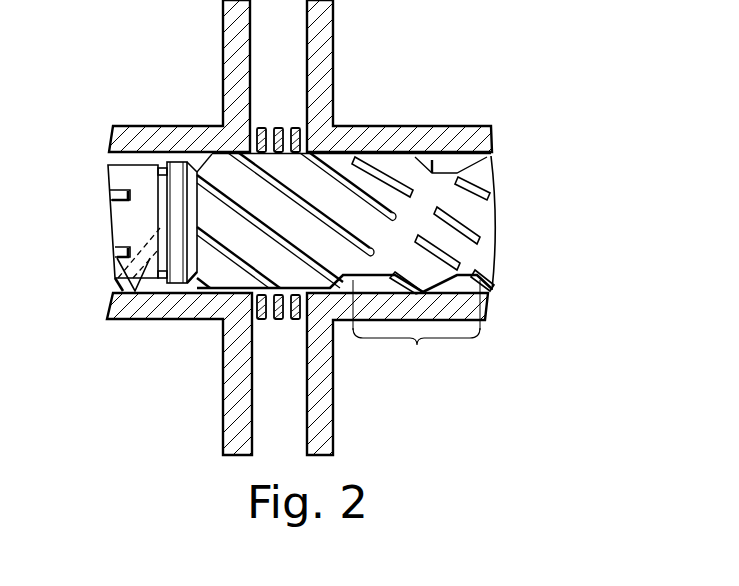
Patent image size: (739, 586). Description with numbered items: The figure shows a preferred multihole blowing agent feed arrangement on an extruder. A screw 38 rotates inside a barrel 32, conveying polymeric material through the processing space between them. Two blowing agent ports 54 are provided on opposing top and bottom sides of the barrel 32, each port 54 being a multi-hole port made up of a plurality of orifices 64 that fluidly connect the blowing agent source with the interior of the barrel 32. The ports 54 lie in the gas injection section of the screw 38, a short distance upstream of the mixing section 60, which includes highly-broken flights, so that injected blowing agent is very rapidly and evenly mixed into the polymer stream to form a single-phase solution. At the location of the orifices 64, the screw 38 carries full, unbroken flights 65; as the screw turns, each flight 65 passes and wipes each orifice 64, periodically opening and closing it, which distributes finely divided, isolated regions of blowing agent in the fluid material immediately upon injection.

The barrel 32 is at (140, 310).
The screw 38 is at (218, 157).
The port 54 is at (275, 336).
The mixing section 60 is at (416, 324).
The orifices 64 is at (296, 128).
The full, unbroken flights 65 is at (336, 237).